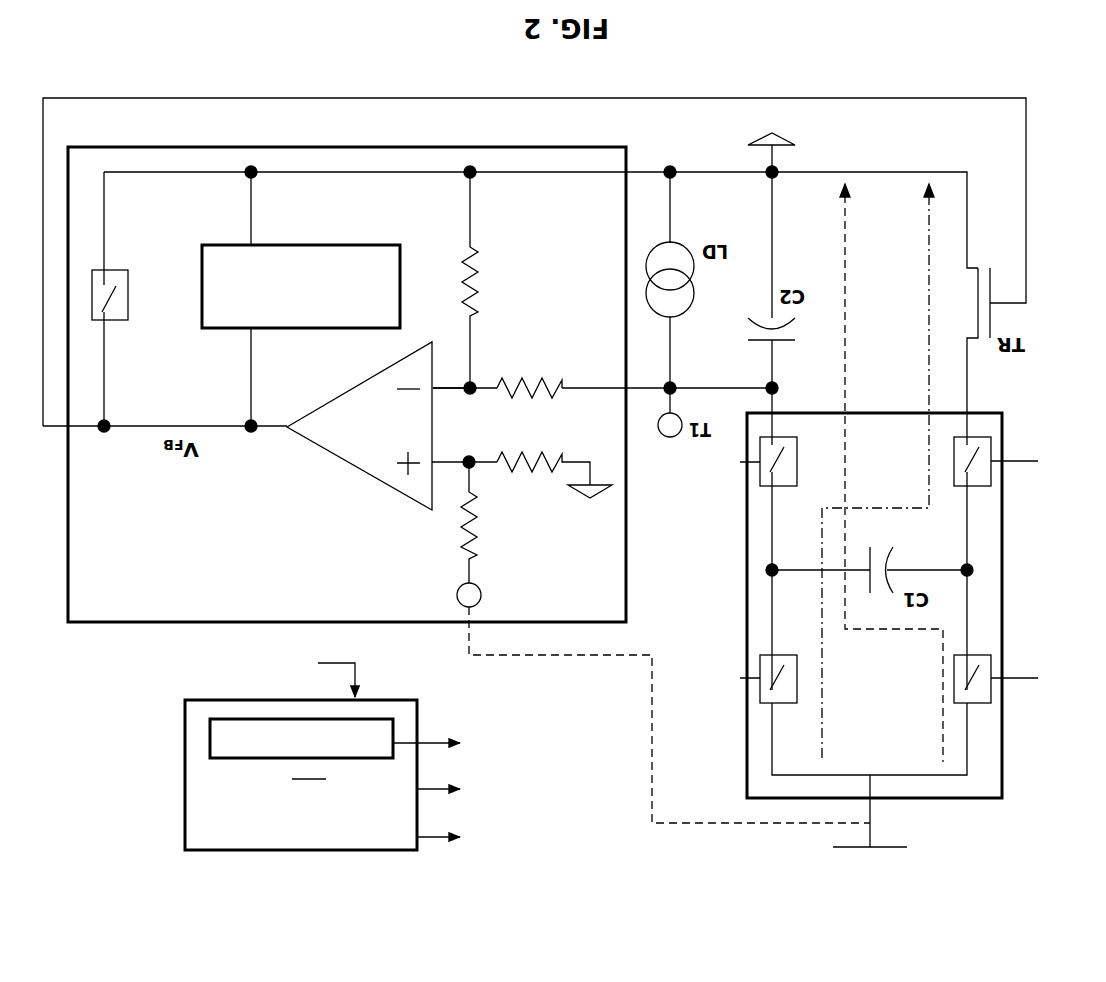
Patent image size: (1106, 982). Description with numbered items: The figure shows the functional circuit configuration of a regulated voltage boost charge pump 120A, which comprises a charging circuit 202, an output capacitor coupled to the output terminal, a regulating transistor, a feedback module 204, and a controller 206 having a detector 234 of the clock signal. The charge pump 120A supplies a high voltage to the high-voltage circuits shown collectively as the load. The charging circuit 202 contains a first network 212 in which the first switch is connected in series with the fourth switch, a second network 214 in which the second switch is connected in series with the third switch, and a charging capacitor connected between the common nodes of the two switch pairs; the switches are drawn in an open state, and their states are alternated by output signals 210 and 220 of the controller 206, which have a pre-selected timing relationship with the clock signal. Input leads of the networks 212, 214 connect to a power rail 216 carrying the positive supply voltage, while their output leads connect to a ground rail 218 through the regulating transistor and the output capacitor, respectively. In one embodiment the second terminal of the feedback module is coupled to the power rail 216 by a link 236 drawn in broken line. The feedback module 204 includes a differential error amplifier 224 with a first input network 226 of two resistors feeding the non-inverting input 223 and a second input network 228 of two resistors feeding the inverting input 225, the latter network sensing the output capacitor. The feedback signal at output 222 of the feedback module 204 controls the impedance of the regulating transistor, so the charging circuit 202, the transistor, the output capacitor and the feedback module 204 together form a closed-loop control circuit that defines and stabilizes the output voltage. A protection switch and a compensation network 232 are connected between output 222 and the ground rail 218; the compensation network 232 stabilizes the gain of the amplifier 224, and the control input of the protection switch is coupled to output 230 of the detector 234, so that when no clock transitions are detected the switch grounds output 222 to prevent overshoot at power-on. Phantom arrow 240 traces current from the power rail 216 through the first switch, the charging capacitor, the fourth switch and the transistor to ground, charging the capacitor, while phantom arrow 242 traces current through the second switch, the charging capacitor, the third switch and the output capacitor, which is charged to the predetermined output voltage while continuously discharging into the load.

The regulated voltage boost charge pump 120A is at (105, 866).
The charging circuit 202 is at (985, 798).
The feedback module 204 is at (108, 622).
The controller 206 is at (301, 750).
The output signal 210 is at (740, 678).
The first network 212 is at (1034, 592).
The second network 214 is at (720, 594).
The power rail 216 is at (848, 849).
The ground rail 218 is at (830, 170).
The output signal 220 is at (740, 462).
The output 222 is at (710, 98).
The non-inverting input 223 is at (460, 468).
The differential error amplifier 224 is at (351, 465).
The inverting input 225 is at (445, 391).
The first input network 226 is at (550, 538).
The second input network 228 is at (538, 328).
The output of detector 230 is at (128, 293).
The compensation network 232 is at (351, 330).
The detector 234 is at (210, 745).
The link 236 is at (652, 775).
The arrow 240 is at (822, 750).
The arrow 242 is at (943, 740).